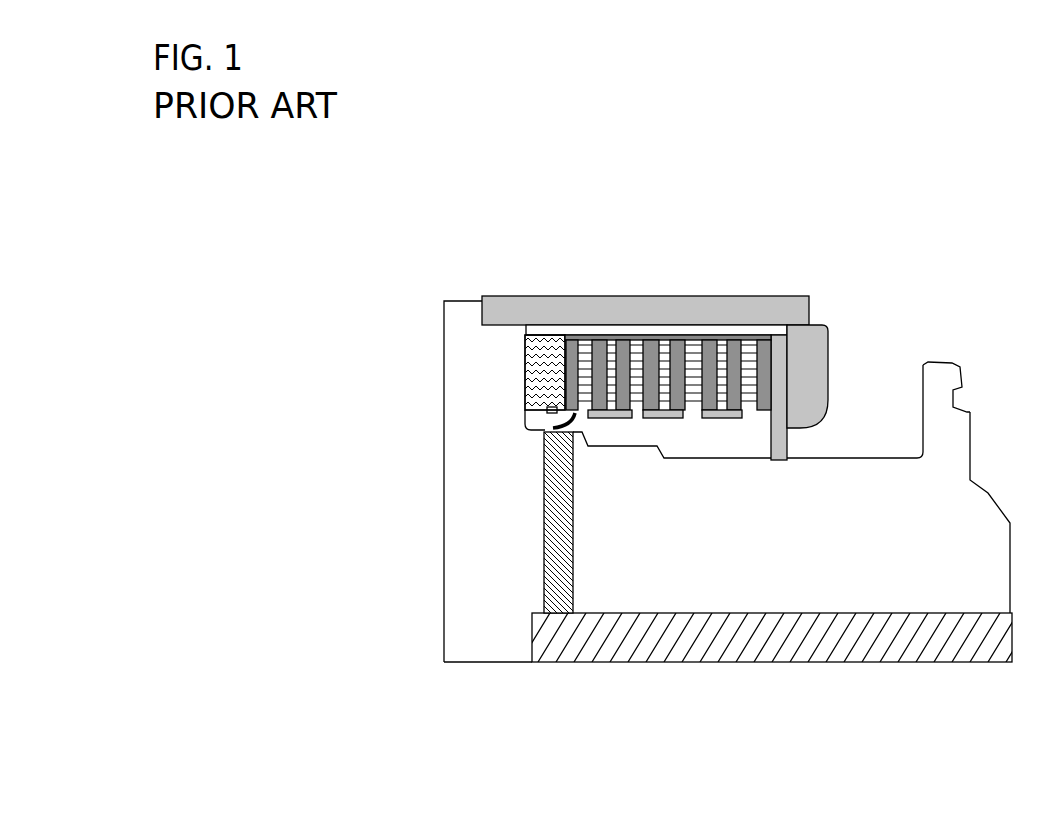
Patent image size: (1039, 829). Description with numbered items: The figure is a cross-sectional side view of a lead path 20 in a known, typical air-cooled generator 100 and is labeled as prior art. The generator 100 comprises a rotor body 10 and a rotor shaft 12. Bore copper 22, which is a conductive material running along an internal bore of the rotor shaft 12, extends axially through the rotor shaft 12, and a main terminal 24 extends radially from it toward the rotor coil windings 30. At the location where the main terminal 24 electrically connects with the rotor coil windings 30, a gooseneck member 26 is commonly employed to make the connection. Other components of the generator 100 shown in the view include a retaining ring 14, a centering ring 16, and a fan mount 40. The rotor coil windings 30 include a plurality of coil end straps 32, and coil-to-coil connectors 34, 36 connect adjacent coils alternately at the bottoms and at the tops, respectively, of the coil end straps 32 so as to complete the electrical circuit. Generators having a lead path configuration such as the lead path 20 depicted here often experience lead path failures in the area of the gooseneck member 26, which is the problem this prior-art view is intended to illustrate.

The air-cooled generator 100 is at (691, 332).
The rotor body 10 is at (502, 551).
The rotor shaft 12 is at (744, 551).
The retaining ring 14 is at (591, 310).
The centering ring 16 is at (806, 355).
The lead path 20 is at (603, 675).
The bore copper 22 is at (780, 640).
The main terminal 24 is at (555, 575).
The gooseneck member 26 is at (543, 420).
The rotor coil windings 30 is at (690, 354).
The coil end straps 32 is at (733, 355).
The coil-to-coil connector 34 is at (620, 418).
The coil-to-coil connector 36 is at (575, 338).
The fan mount 40 is at (952, 362).